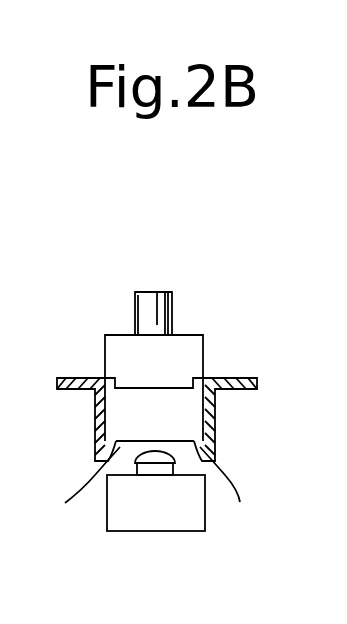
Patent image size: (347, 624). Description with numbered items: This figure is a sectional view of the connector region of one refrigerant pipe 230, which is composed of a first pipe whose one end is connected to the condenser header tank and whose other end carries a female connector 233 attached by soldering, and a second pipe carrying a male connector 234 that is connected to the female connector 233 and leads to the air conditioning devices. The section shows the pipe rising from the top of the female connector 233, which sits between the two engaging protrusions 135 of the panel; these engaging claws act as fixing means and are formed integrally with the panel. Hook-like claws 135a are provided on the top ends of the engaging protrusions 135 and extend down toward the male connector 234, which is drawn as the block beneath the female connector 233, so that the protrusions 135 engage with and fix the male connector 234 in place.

The refrigerant pipe 230 is at (173, 308).
The female connector 233 is at (204, 353).
The engaging protrusions 135 is at (95, 415).
The hook-like claws 135a is at (152, 489).
The male connector 234 is at (183, 531).